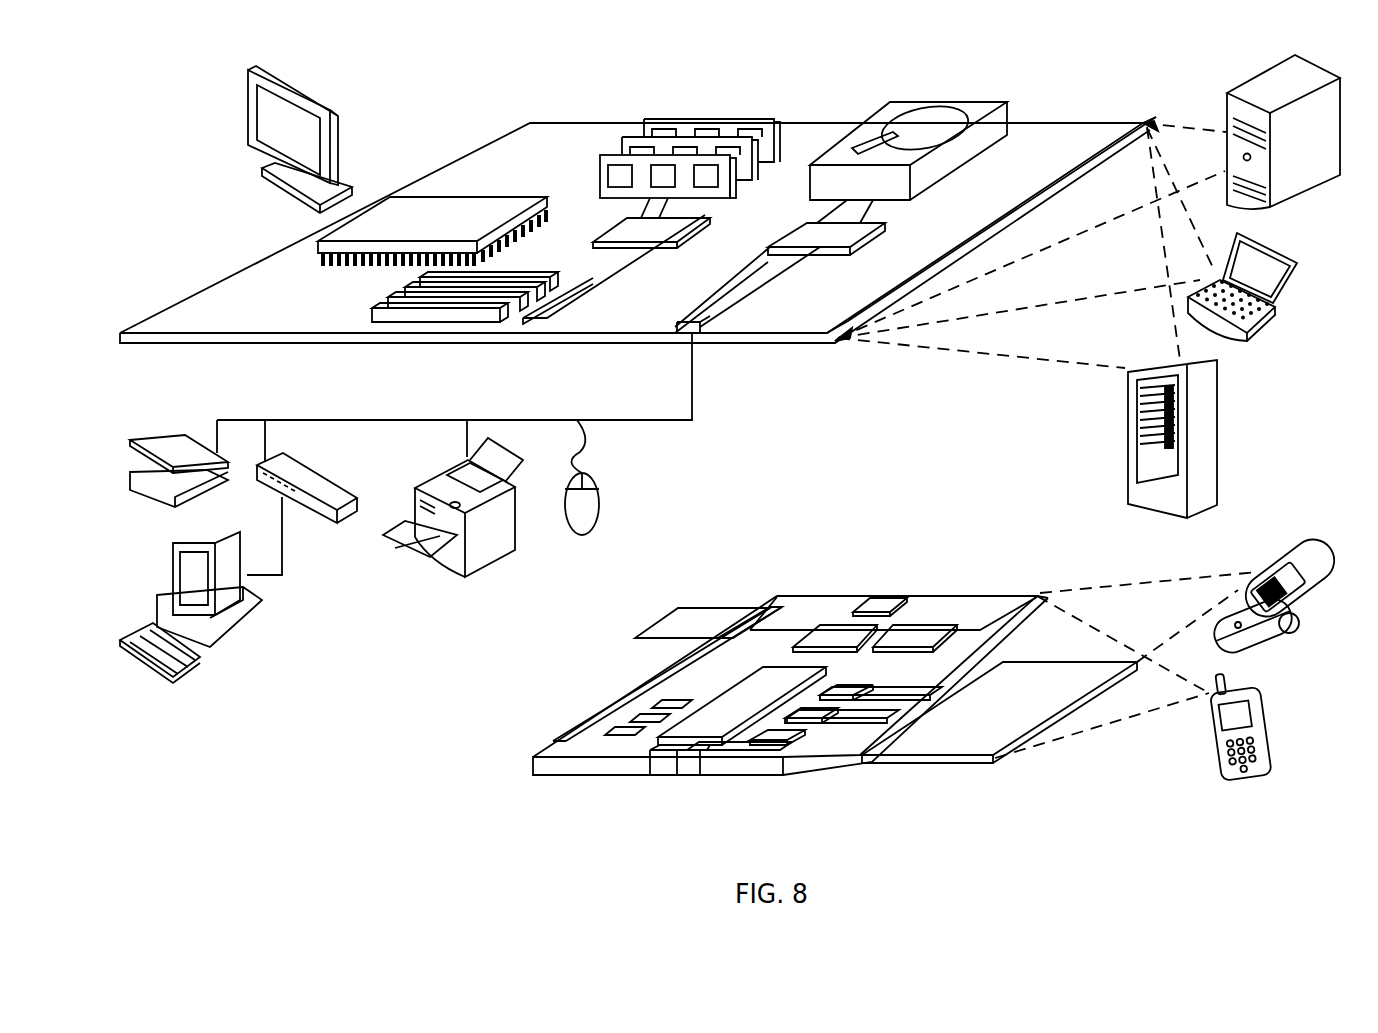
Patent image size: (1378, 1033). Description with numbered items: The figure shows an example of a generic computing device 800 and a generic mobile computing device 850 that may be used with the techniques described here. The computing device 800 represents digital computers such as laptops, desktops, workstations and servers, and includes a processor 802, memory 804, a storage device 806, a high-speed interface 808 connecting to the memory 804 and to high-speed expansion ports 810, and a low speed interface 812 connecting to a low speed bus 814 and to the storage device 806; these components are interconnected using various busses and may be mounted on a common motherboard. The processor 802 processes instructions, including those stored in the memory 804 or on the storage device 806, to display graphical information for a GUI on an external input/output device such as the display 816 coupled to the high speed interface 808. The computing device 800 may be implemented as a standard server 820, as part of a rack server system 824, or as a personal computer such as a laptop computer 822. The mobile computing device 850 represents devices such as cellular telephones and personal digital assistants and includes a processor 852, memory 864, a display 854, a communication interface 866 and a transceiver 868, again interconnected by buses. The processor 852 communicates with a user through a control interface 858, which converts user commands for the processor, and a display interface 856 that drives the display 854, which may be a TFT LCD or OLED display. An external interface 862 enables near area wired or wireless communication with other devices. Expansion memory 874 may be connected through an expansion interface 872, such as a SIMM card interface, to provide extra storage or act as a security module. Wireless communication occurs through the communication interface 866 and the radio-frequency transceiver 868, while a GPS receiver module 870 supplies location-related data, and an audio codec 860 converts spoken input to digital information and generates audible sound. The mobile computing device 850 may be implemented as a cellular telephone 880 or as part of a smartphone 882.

The computing device 800 is at (446, 94).
The processor 802 is at (316, 246).
The memory 804 is at (652, 136).
The storage device 806 is at (896, 111).
The high-speed interface 808 is at (626, 227).
The high-speed expansion ports 810 is at (380, 307).
The low speed interface 812 is at (808, 232).
The low speed bus 814 is at (704, 335).
The display 816 is at (250, 70).
The standard server 820 is at (1228, 118).
The laptop computer 822 is at (1293, 266).
The rack server system 824 is at (1130, 462).
The mobile computing device 850 is at (503, 773).
The processor 852 is at (712, 730).
The display 854 is at (958, 745).
The display interface 856 is at (787, 742).
The control interface 858 is at (822, 720).
The audio codec 860 is at (847, 695).
The external interface 862 is at (678, 770).
The memory 864 is at (610, 728).
The communication interface 866 is at (833, 640).
The transceiver 868 is at (918, 640).
The GPS receiver module 870 is at (885, 600).
The expansion interface 872 is at (756, 610).
The expansion memory 874 is at (684, 610).
The cellular telephone 880 is at (1263, 564).
The smartphone 882 is at (1213, 735).